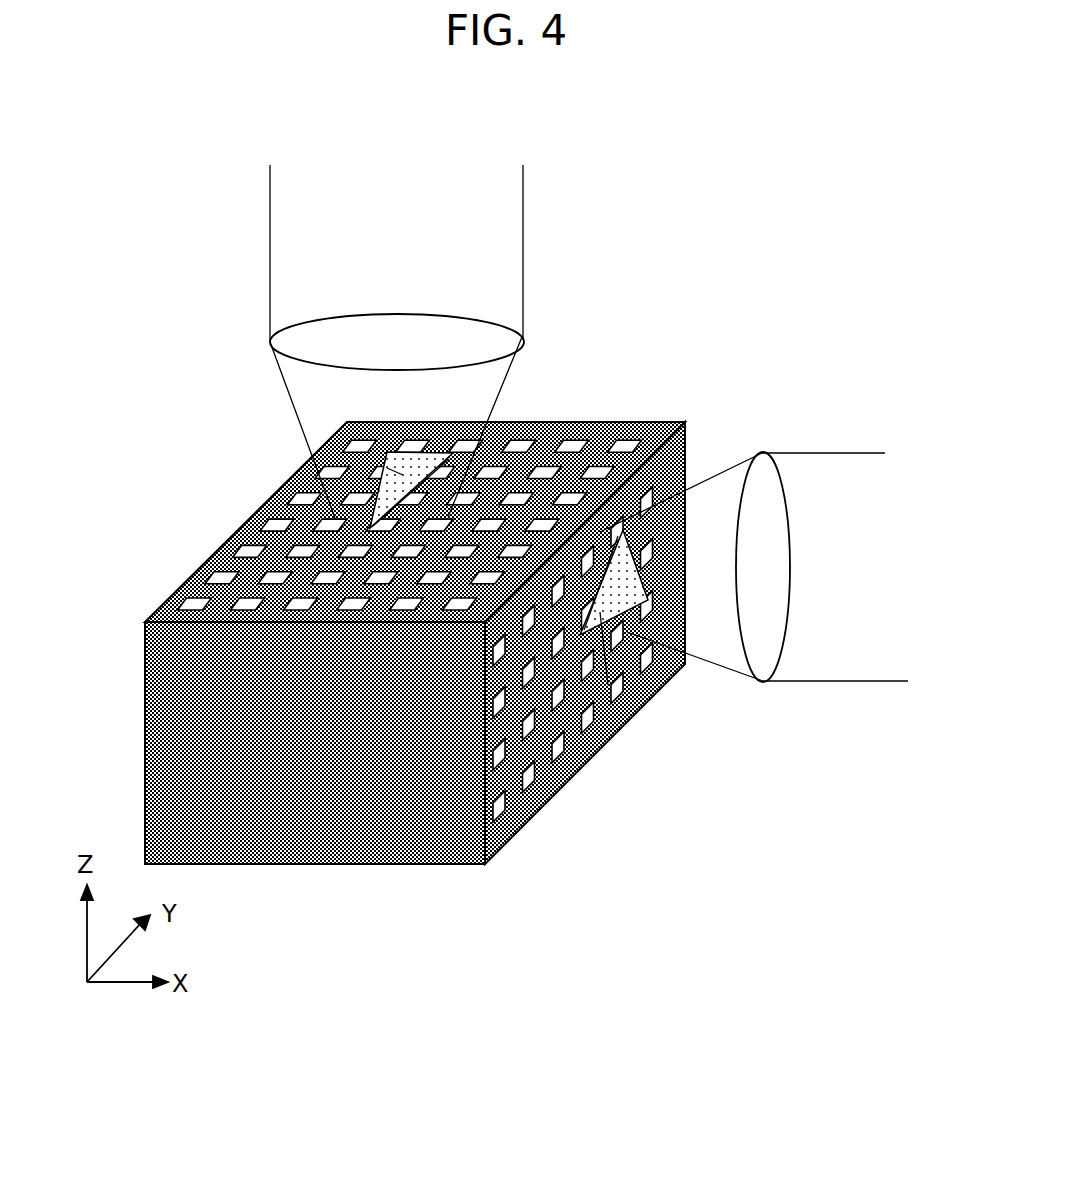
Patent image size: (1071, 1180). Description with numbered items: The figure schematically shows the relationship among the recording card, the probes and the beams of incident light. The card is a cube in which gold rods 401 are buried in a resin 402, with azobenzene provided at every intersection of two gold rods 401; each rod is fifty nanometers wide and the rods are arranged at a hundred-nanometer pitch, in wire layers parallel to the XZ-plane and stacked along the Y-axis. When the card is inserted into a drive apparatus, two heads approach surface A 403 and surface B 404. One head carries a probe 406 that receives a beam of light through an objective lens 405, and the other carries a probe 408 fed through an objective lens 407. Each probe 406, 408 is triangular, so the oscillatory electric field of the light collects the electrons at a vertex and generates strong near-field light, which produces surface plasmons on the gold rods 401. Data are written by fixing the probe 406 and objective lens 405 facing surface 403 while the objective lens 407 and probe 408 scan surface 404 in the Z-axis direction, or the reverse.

The gold rods 401 is at (240, 530).
The resin 402 is at (145, 668).
The surface A 403 is at (608, 432).
The surface B 404 is at (686, 454).
The objective lens 405 is at (287, 337).
The probe 406 is at (387, 454).
The objective lens 407 is at (761, 670).
The probe 408 is at (597, 752).